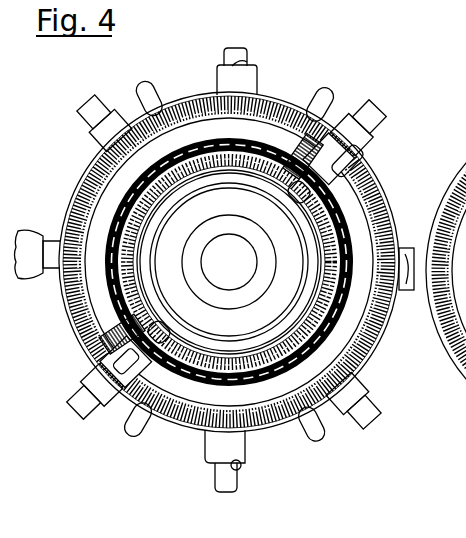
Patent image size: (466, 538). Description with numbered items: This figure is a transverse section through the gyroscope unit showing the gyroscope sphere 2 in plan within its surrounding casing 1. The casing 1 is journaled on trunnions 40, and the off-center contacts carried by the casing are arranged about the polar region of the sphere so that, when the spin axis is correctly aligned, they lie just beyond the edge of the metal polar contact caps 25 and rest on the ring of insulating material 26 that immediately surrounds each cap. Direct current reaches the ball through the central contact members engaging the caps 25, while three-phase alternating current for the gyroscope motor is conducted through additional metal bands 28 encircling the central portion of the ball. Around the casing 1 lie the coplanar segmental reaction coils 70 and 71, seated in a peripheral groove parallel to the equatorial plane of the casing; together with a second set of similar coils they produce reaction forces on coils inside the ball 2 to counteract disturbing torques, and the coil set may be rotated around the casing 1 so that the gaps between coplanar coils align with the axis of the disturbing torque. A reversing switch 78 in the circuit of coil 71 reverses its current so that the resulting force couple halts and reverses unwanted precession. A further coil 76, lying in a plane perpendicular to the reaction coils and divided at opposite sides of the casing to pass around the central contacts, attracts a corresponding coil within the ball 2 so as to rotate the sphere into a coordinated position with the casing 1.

The casing 1 is at (67, 190).
The gyroscope sphere 2 is at (229, 262).
The metal polar contact caps 25 is at (229, 262).
The ring of insulating material 26 is at (240, 222).
The metal bands 28 is at (165, 274).
The trunnions 40 is at (217, 82).
The coplanar segmental coil 70 is at (112, 221).
The coplanar segmental coil 71 is at (316, 347).
The coil 76 is at (294, 202).
The reversing switch 78 is at (392, 148).